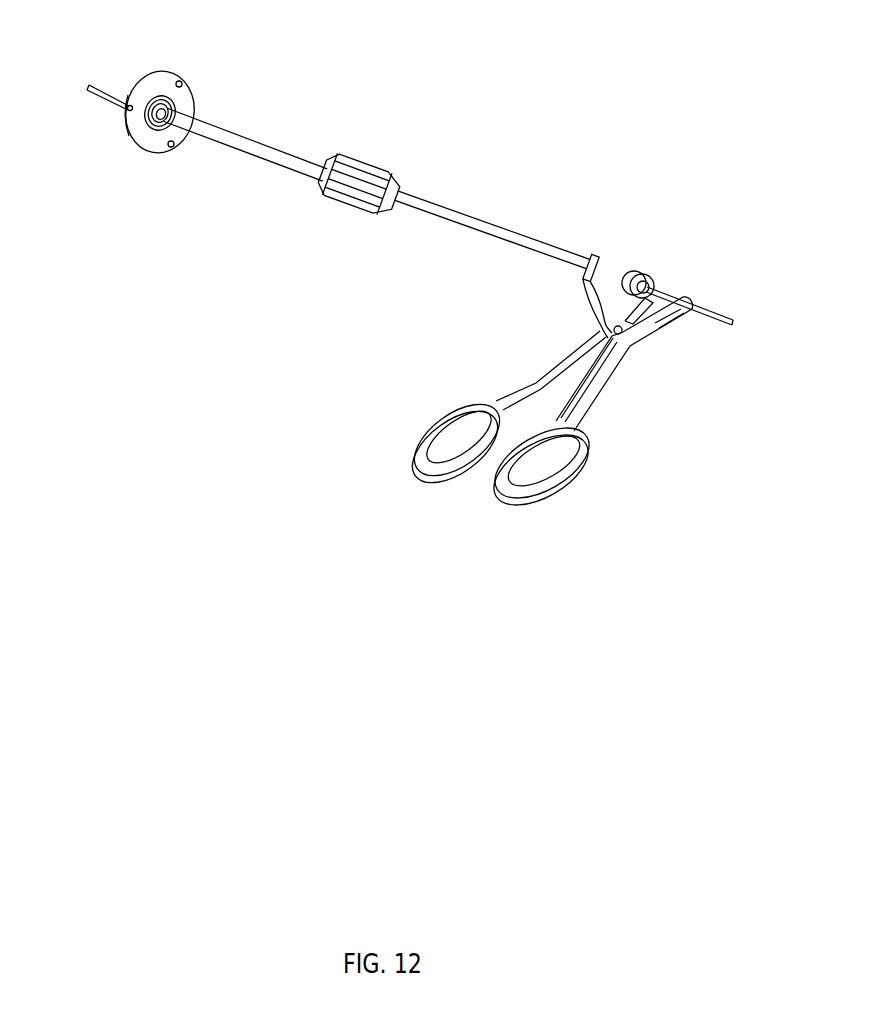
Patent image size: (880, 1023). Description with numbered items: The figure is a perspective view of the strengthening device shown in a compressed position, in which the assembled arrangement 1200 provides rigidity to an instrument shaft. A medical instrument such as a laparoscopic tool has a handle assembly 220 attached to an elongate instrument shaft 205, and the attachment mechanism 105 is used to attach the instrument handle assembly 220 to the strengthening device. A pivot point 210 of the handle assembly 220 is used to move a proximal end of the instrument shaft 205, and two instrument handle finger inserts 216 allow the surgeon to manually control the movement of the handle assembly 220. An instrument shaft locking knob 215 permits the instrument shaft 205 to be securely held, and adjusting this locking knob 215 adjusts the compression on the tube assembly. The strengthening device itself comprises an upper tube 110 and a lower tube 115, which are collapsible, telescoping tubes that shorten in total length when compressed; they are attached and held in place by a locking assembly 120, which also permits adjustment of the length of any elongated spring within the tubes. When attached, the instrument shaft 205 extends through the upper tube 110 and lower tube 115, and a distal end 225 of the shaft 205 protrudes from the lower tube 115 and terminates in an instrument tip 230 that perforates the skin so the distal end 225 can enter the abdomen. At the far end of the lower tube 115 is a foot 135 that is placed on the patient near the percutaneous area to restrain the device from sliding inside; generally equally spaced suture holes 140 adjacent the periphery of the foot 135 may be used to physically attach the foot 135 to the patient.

The surgical instrument system 1200 is at (460, 121).
The attachment mechanism 105 is at (581, 281).
The upper tube 110 is at (483, 231).
The lower tube 115 is at (238, 138).
The locking assembly 120 is at (330, 190).
The foot 135 is at (126, 136).
The suture holes 140 is at (182, 84).
The instrument shaft 205 is at (717, 324).
The pivot point 210 is at (612, 331).
The instrument shaft locking knob 215 is at (636, 272).
The instrument handle finger inserts 216 is at (445, 440).
The handle assembly 220 is at (560, 364).
The distal end 225 is at (128, 90).
The instrument tip 230 is at (92, 90).